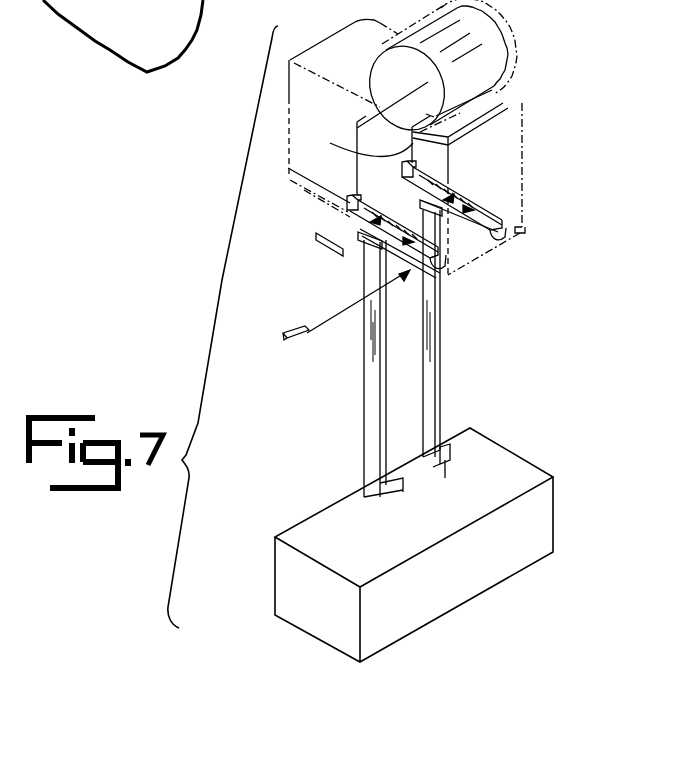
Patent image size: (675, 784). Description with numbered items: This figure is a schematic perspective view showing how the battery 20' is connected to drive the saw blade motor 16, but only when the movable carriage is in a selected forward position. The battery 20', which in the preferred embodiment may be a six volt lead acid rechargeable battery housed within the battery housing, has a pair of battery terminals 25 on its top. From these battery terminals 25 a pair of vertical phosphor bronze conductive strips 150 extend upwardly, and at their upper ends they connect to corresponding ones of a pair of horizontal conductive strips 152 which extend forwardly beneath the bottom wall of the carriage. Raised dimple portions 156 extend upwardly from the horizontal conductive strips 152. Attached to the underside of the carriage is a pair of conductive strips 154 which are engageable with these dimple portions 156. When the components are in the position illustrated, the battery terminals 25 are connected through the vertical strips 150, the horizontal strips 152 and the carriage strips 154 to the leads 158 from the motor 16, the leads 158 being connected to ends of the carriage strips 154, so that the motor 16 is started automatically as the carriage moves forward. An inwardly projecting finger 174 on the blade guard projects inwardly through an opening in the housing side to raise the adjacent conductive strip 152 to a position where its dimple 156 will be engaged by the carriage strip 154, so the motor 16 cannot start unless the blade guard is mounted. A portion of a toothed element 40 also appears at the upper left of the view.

The gear 40 is at (123, 36).
The motor 16 is at (477, 37).
The leads 158 is at (343, 146).
The conductive strips 154 is at (352, 208).
The horizontal conductive strips 152 is at (397, 257).
The raised dimple portions 156 is at (416, 268).
The inwardly projecting finger 174 is at (302, 333).
The vertical conductive strips 150 is at (367, 390).
The battery terminals 25 is at (378, 510).
The battery 20' is at (414, 545).